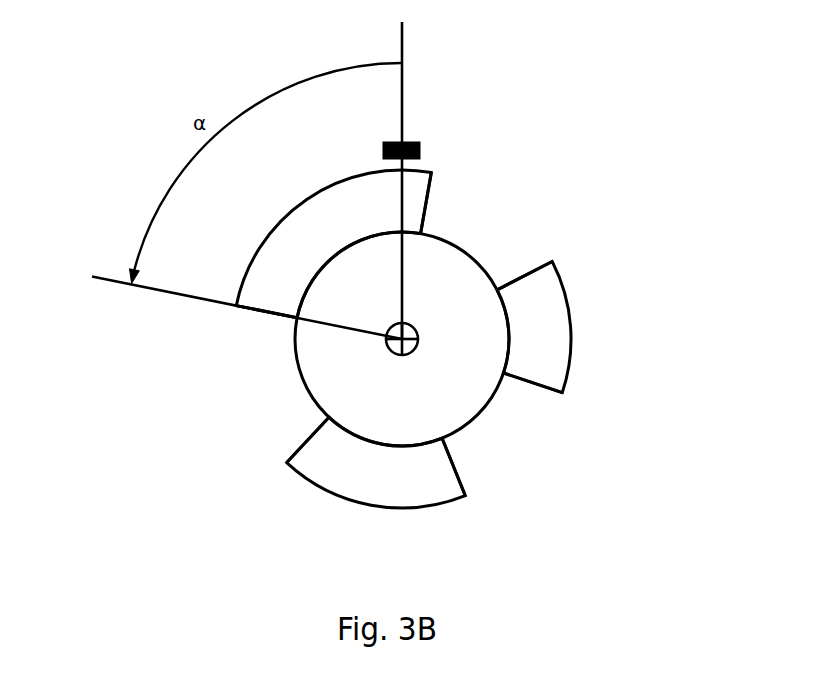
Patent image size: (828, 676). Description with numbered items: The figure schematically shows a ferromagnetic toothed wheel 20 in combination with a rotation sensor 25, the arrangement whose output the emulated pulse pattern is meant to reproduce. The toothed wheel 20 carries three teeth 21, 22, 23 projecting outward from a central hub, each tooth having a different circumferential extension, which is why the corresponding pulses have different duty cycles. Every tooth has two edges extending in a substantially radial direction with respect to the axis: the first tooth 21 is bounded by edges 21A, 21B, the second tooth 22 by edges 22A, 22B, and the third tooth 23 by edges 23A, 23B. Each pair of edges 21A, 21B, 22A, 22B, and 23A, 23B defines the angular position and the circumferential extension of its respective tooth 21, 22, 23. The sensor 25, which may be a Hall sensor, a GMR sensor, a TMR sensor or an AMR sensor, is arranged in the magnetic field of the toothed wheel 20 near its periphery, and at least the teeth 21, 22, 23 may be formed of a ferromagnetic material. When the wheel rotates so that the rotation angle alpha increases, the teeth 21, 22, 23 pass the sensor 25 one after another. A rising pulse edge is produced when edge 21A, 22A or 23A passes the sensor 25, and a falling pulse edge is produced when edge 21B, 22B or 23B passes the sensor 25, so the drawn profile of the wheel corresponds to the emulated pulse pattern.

The toothed wheel 20 is at (536, 109).
The tooth 21 is at (318, 192).
The edge 21A is at (258, 312).
The edge 21B is at (427, 205).
The tooth 22 is at (572, 333).
The edge 22A is at (523, 268).
The edge 22B is at (537, 388).
The tooth 23 is at (327, 495).
The edge 23A is at (458, 468).
The edge 23B is at (300, 442).
The rotation sensor 25 is at (420, 150).